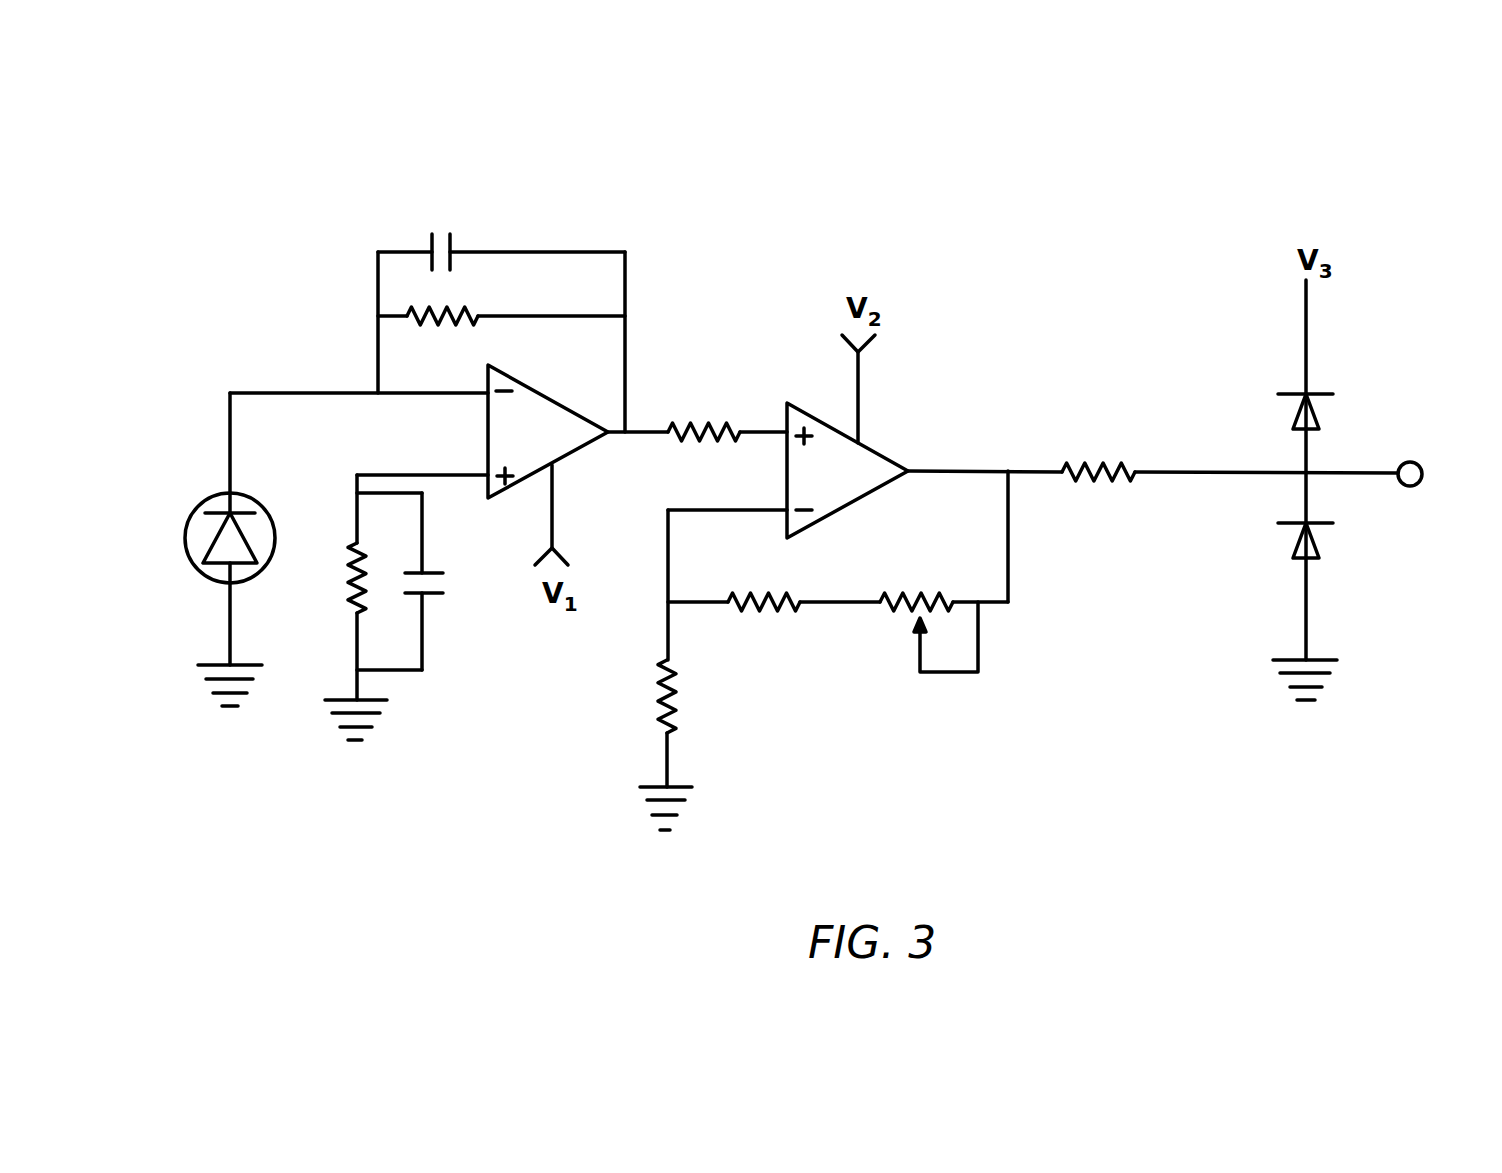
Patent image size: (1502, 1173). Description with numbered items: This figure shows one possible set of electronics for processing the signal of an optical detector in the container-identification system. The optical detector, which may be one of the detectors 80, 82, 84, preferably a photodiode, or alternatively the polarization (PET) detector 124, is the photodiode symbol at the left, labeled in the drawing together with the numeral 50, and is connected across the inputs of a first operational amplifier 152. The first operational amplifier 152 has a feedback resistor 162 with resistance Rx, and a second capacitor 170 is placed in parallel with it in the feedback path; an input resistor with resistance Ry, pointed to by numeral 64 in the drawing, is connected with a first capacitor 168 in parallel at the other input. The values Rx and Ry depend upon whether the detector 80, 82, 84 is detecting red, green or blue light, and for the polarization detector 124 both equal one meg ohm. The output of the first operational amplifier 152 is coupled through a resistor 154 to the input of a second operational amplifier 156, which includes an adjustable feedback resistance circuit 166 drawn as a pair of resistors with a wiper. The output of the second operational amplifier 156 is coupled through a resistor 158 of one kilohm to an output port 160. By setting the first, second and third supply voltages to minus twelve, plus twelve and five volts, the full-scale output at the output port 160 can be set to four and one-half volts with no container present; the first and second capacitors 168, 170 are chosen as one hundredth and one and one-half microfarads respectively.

The photodetector 50 is at (204, 519).
The detector 80 is at (204, 483).
The detector 82 is at (204, 483).
The detector 84 is at (204, 510).
The polarization (PET) detector 124 is at (203, 497).
The load resistor Ry 64 is at (327, 618).
The first operational amplifier 152 is at (585, 450).
The resistor 154 is at (703, 427).
The second operational amplifier 156 is at (883, 455).
The resistor 158 is at (1100, 468).
The output port 160 is at (1420, 463).
The feedback resistor 162 is at (438, 308).
The adjustable feedback resistance circuit 166 is at (843, 705).
The first capacitor 168 is at (447, 623).
The second capacitor 170 is at (430, 198).